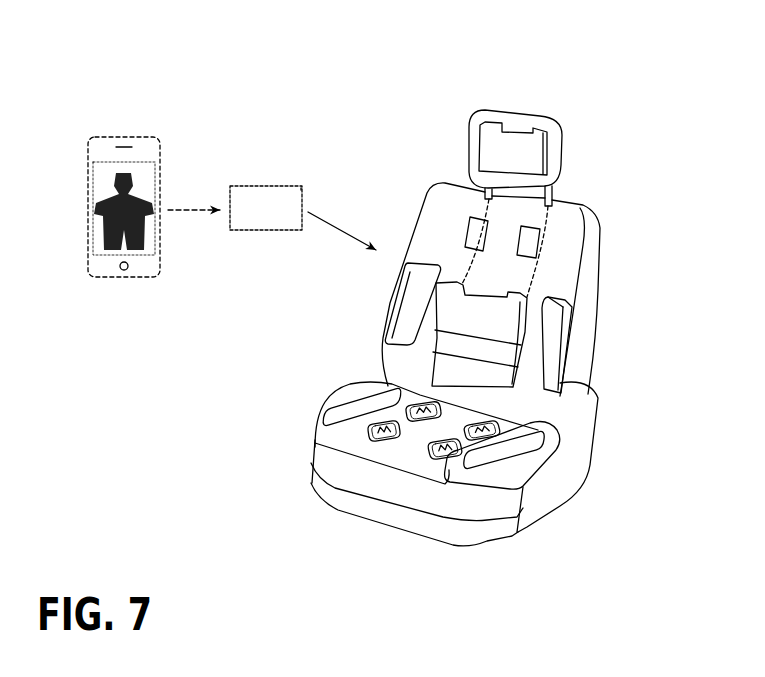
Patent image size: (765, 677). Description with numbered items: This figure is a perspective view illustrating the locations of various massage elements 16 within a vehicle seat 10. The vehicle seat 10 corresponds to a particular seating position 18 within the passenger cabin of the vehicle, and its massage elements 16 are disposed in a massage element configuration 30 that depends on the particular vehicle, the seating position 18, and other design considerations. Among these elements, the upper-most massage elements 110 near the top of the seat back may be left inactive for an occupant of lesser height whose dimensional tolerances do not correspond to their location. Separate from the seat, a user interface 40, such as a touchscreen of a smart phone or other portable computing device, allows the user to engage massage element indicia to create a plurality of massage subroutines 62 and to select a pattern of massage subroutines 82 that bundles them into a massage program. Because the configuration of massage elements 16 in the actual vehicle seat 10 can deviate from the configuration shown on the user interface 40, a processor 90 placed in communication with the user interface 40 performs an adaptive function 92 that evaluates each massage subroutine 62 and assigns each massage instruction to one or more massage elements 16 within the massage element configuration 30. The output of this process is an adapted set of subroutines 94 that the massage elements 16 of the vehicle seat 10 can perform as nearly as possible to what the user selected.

The vehicle seat 10 is at (620, 248).
The massage elements 16 is at (553, 357).
The seating position 18 is at (454, 126).
The massage element configuration 30 is at (430, 289).
The user interface 40 is at (82, 182).
The massage subroutines 62 is at (193, 206).
The pattern of massage subroutines 82 is at (366, 354).
The processor 90 is at (272, 222).
The adaptive function 92 is at (303, 187).
The adapted set of subroutines 94 is at (340, 226).
The upper-most massage elements 110 is at (553, 204).